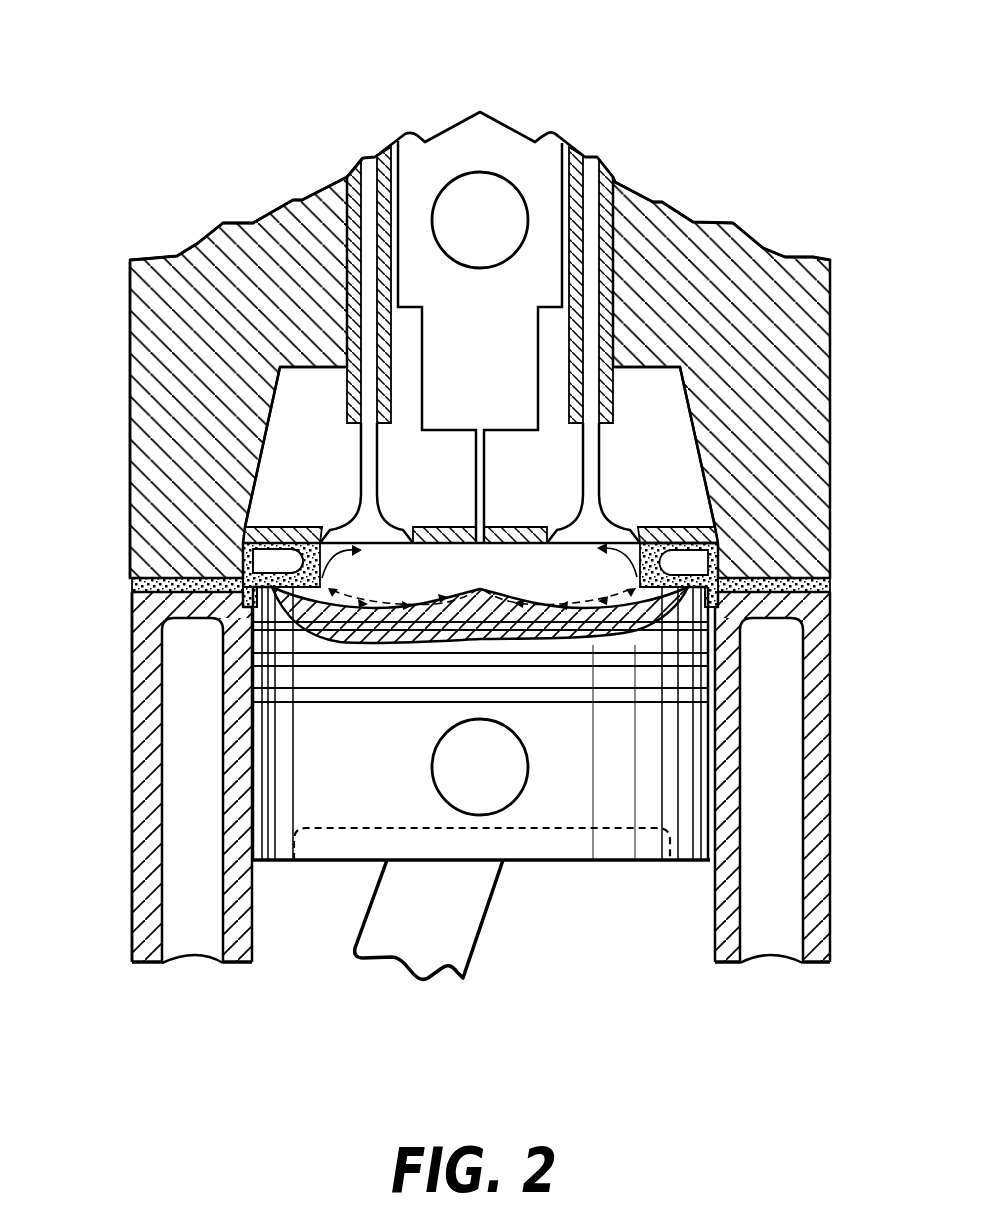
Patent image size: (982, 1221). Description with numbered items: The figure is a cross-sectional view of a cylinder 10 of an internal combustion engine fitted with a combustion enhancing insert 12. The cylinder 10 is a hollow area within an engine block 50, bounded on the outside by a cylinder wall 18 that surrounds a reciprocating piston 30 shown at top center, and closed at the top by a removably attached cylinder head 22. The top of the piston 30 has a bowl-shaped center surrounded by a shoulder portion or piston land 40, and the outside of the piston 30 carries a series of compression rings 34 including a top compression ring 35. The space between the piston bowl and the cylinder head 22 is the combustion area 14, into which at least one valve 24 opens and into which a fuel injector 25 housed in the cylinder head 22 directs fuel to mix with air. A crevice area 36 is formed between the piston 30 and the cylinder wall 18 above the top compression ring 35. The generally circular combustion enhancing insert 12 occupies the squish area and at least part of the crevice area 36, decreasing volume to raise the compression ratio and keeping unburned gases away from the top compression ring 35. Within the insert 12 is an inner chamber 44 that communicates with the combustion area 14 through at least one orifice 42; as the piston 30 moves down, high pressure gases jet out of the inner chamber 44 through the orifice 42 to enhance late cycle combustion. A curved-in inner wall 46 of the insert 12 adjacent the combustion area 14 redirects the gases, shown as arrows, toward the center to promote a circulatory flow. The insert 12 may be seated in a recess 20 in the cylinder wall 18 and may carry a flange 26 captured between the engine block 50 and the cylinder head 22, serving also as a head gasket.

The cylinder 10 is at (410, 103).
The combustion enhancing insert 12 is at (243, 540).
The combustion area 14 is at (527, 567).
The cylinder wall 18 is at (198, 957).
The recess 20 is at (243, 579).
The cylinder head 22 is at (128, 411).
The valve 24 is at (360, 460).
The fuel injector 25 is at (473, 500).
The flange 26 is at (132, 588).
The piston 30 is at (552, 862).
The compression rings 34 is at (703, 699).
The top compression ring 35 is at (703, 658).
The crevice area 36 is at (232, 621).
The piston land 40 is at (718, 560).
The orifice 42 is at (307, 573).
The inner chamber 44 is at (270, 560).
The inner wall 46 is at (713, 543).
The engine block 50 is at (132, 833).